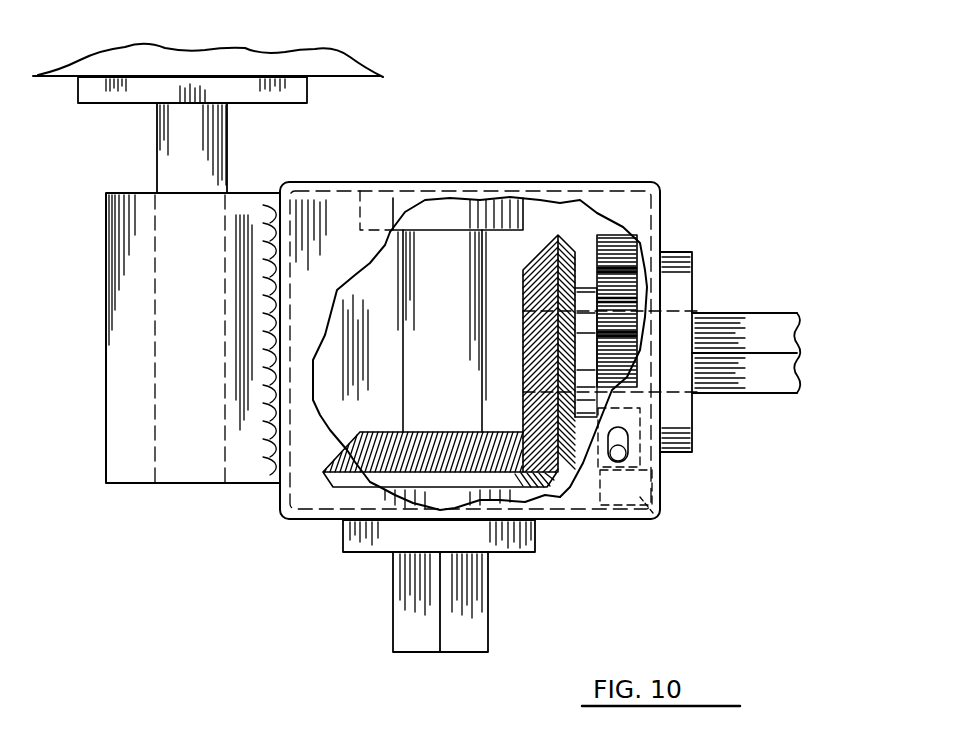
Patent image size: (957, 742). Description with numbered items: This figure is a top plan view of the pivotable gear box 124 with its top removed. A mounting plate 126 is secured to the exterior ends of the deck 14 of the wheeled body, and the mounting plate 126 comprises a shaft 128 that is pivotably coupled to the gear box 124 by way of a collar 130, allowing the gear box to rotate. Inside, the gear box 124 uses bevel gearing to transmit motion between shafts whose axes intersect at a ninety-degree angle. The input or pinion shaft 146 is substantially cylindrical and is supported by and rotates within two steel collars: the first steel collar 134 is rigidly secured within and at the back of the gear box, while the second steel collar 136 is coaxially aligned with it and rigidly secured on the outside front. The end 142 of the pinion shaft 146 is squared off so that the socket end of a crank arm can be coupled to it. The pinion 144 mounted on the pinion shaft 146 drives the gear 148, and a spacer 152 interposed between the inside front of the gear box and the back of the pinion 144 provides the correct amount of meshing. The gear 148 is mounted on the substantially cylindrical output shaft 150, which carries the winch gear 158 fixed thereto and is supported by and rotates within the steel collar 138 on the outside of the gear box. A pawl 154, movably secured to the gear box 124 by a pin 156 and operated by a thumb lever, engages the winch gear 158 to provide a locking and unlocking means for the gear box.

The deck 14 is at (343, 80).
The gear box 124 is at (484, 104).
The mounting plate 126 is at (273, 97).
The shaft 128 is at (170, 152).
The collar 130 is at (135, 337).
The first steel collar 134 is at (457, 207).
The second steel collar 136 is at (517, 553).
The steel collar 138 is at (692, 252).
The end of the pinion shaft 142 is at (402, 641).
The pinion 144 is at (380, 472).
The pinion shaft 146 is at (462, 387).
The gear 148 is at (557, 235).
The output shaft 150 is at (765, 320).
The spacer 152 is at (410, 500).
The pawl 154 is at (693, 433).
The pin 156 is at (656, 521).
The winch gear 158 is at (618, 250).